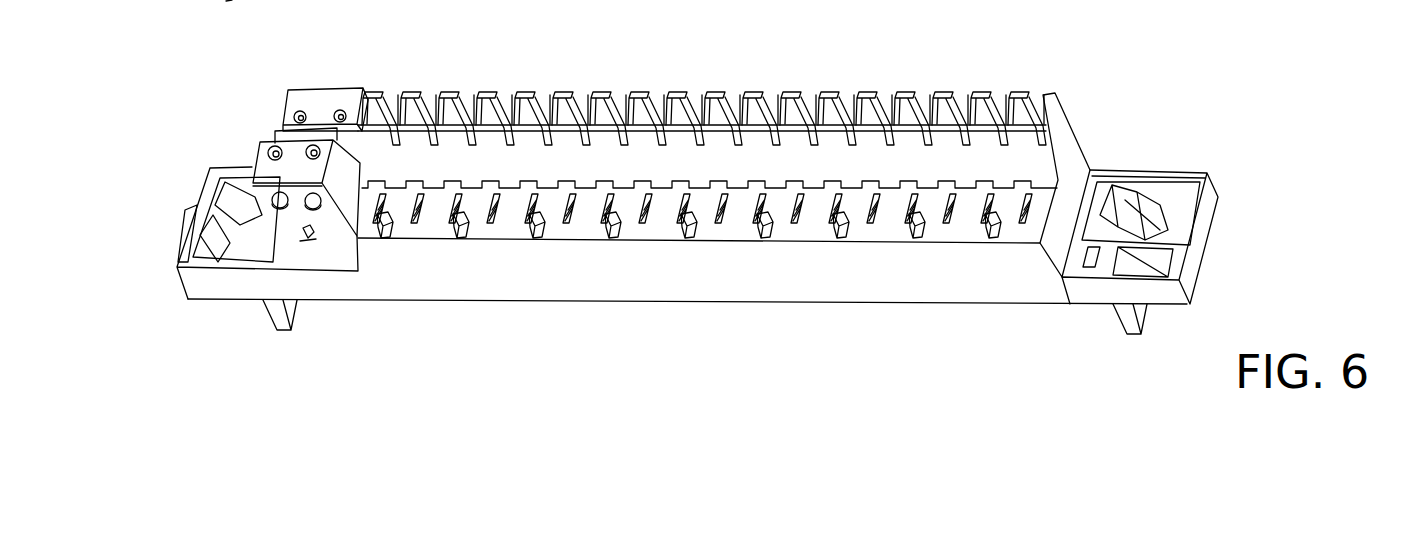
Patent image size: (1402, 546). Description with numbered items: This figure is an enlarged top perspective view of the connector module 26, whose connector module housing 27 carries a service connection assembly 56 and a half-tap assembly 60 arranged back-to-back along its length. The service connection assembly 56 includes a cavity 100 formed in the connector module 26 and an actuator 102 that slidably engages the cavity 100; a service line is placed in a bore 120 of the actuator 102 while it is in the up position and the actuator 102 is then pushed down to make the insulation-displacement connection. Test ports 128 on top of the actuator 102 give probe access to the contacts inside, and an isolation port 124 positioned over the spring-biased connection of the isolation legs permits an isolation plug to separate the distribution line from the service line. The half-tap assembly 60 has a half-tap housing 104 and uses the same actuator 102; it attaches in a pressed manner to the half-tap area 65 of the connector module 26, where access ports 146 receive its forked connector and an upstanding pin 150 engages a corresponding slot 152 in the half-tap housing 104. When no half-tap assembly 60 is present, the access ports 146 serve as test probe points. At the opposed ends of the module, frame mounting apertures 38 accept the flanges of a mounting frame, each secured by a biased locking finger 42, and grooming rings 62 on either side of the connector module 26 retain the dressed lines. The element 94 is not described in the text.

The connector module 26 is at (152, 100).
The connector module housing 27 is at (628, 278).
The frame mounting aperture 38 is at (260, 257).
The biased locking finger 42 is at (240, 193).
The service connection assembly 56 is at (283, 100).
The half-tap assembly 60 is at (247, 149).
The grooming ring 62 is at (202, 257).
The half-tap area 65 is at (702, 243).
The lead 94 is at (228, 0).
The cavity 100 is at (563, 100).
The actuator 102 is at (306, 100).
The half-tap housing 104 is at (292, 232).
The bore 120 is at (308, 232).
The isolation port 124 is at (513, 180).
The test port 128 is at (318, 143).
The access port 146 is at (482, 218).
The upstanding pin 150 is at (455, 222).
The slot 152 is at (306, 238).